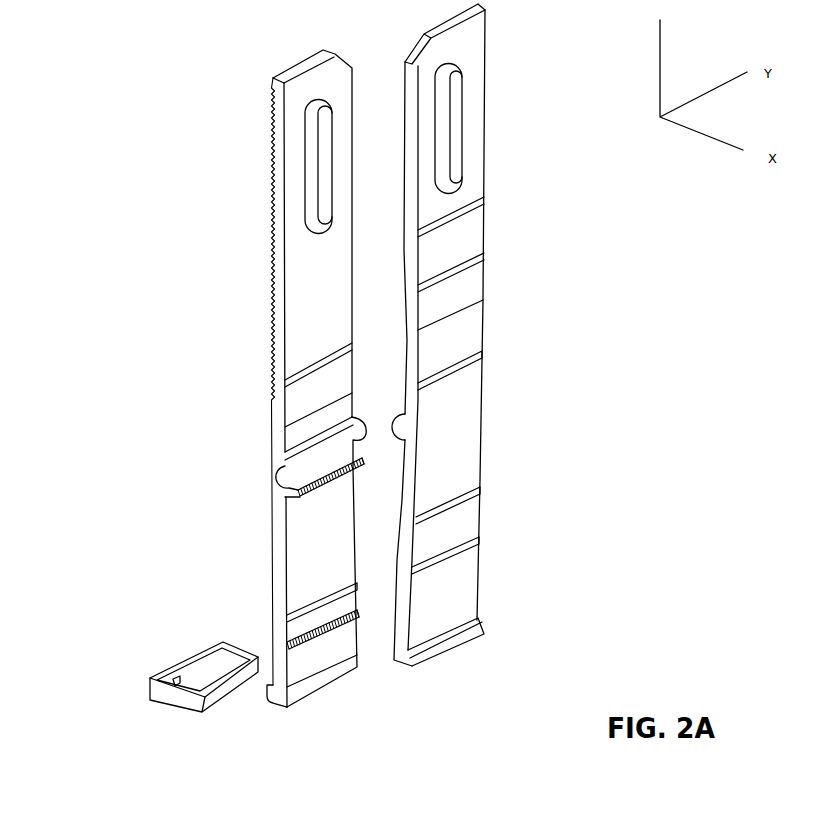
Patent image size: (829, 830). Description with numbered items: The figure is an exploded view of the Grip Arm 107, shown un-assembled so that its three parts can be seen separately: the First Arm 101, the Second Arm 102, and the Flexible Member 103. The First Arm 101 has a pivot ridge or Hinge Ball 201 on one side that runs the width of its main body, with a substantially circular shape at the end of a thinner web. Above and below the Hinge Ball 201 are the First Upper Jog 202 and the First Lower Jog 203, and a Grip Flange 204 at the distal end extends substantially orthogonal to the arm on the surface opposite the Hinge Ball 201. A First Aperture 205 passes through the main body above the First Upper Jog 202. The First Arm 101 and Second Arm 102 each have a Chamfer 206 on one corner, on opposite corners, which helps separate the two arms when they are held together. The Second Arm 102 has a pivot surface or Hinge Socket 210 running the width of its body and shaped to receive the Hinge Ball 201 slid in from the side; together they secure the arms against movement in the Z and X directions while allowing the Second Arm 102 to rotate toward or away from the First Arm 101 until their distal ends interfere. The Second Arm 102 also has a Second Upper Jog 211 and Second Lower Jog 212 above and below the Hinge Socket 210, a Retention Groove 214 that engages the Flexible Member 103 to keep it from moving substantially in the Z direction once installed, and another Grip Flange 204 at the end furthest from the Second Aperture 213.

The Grip Arm 107 is at (93, 127).
The First Arm 101 is at (493, 267).
The Second Arm 102 is at (247, 302).
The Flexible Member 103 is at (173, 718).
The Hinge Ball 201 is at (413, 433).
The First Upper Jog 202 is at (498, 340).
The First Lower Jog 203 is at (498, 513).
The Grip Flange 204 is at (493, 613).
The First Aperture 205 is at (453, 138).
The Chamfers 206 is at (395, 50).
The Hinge Socket 210 is at (267, 475).
The Second Upper Jog 211 is at (263, 383).
The Second Lower Jog 212 is at (263, 522).
The Second Aperture 213 is at (315, 188).
The Retention Groove 214 is at (287, 623).